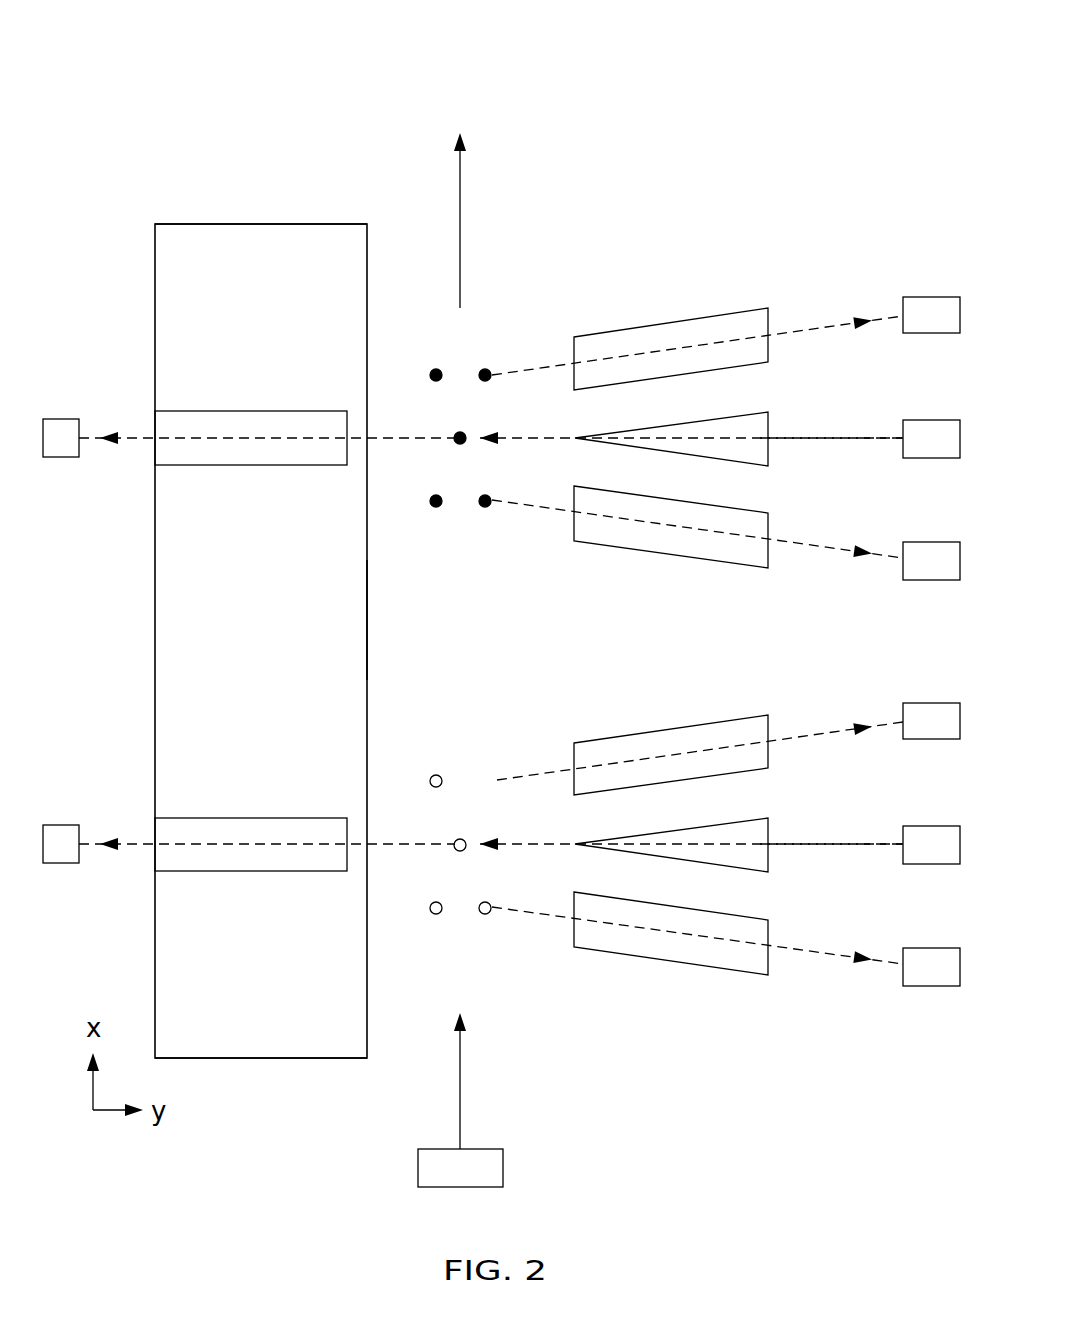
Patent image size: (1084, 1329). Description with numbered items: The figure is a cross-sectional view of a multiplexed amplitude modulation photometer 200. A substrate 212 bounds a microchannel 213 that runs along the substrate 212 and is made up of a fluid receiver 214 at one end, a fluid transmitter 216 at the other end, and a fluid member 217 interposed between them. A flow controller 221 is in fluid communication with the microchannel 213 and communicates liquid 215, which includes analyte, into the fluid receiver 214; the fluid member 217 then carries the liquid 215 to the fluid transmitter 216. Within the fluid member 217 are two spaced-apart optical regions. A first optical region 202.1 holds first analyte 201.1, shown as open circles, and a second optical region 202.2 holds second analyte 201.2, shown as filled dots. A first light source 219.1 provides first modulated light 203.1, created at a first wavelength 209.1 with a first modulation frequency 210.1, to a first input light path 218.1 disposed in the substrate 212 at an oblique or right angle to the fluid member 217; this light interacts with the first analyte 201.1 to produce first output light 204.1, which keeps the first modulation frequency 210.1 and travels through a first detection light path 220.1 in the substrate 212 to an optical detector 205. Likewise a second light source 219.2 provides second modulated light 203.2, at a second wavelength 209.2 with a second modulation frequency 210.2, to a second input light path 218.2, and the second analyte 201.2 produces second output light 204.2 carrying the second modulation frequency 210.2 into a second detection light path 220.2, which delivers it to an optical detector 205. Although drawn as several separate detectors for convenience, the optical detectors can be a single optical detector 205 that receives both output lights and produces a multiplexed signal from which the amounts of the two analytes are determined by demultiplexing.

The multiplexed amplitude modulation photometer 200 is at (110, 78).
The substrate 212 is at (175, 224).
The fluid transmitter 216 is at (367, 240).
The fluid receiver 214 is at (367, 1025).
The fluid member 217 is at (367, 588).
The microchannel 213 is at (367, 645).
The second detection light path 220.2 is at (250, 465).
The first detection light path 220.1 is at (250, 871).
The second input light path 218.2 is at (690, 421).
The first input light path 218.1 is at (690, 828).
The liquid 215 is at (460, 180).
The flow controller 221 is at (460, 1168).
The optical detector 205 is at (501, 641).
The second light source 219.2 is at (931, 439).
The first light source 219.1 is at (931, 845).
The second modulation frequency 210.2 is at (143, 437).
The first modulation frequency 210.1 is at (143, 843).
The second output light 204.2 is at (133, 440).
The first output light 204.1 is at (133, 846).
The second wavelength 209.2 is at (813, 440).
The first wavelength 209.1 is at (813, 846).
The second modulated light 203.2 is at (888, 440).
The first modulated light 203.1 is at (888, 846).
The second optical region 202.2 is at (443, 465).
The second analyte 201.2 is at (484, 508).
The first optical region 202.1 is at (420, 762).
The first analyte 201.1 is at (440, 774).